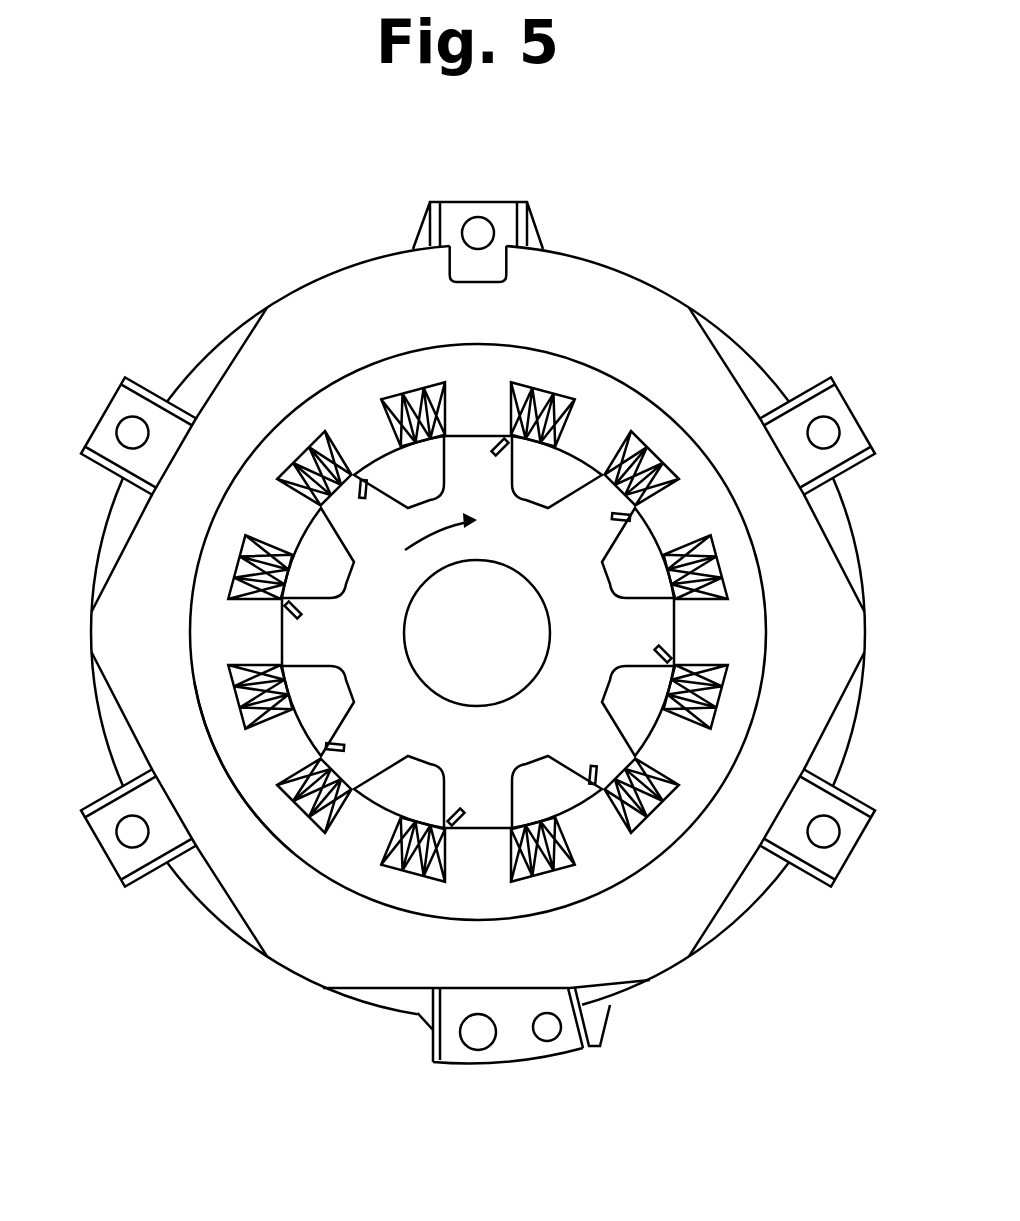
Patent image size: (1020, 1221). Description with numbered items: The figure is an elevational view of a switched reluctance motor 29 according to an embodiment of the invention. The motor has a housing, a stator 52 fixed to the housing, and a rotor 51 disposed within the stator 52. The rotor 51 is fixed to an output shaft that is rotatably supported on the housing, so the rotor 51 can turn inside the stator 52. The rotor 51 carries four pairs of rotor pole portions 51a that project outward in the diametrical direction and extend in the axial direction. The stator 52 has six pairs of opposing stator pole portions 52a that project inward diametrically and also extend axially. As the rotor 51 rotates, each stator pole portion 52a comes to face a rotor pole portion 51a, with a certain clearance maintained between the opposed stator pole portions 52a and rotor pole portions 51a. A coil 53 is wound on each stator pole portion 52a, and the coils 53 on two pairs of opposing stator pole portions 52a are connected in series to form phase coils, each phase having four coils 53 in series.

The motor stator assembly 29 is at (478, 620).
The rotor 51 is at (478, 504).
The rotor pole portions 51a is at (478, 506).
The stator 52 is at (478, 570).
The stator pole portions 52a is at (236, 867).
The coil 53 is at (501, 717).